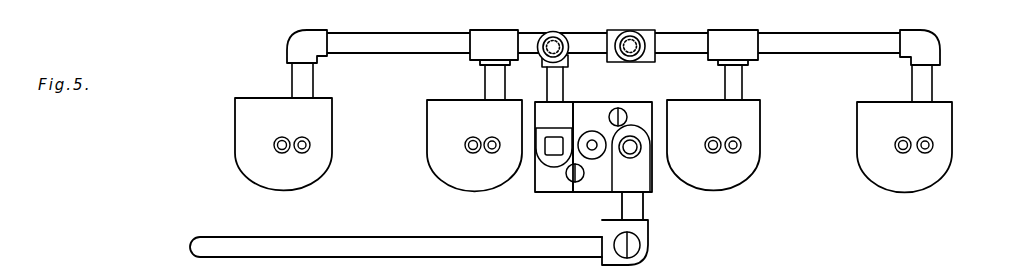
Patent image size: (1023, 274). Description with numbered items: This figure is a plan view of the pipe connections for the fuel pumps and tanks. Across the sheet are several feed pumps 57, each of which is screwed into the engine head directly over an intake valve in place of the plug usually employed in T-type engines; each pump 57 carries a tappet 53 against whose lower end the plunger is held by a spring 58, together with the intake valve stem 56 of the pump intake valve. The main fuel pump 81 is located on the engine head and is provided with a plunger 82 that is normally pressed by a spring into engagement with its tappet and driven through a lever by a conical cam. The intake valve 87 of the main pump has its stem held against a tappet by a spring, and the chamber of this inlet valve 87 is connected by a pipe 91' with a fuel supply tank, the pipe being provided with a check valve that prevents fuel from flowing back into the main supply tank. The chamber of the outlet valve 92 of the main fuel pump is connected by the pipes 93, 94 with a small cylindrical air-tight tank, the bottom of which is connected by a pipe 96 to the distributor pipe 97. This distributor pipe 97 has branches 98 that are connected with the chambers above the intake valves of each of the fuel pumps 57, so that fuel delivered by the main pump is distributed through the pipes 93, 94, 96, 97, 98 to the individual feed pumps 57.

The tappet 53 is at (274, 145).
The intake valve stem 56 is at (310, 145).
The fuel pump 57 is at (253, 110).
The spring 58 is at (923, 82).
The main fuel pump 81 is at (558, 176).
The plunger 82 is at (594, 155).
The intake valve 87 is at (631, 158).
The pipe 91' is at (419, 228).
The outlet valve 92 is at (588, 97).
The pipe 93 is at (553, 86).
The pipe 94 is at (546, 40).
The pipe 96 is at (643, 43).
The distributor pipe 97 is at (383, 46).
The branches 98 is at (313, 73).